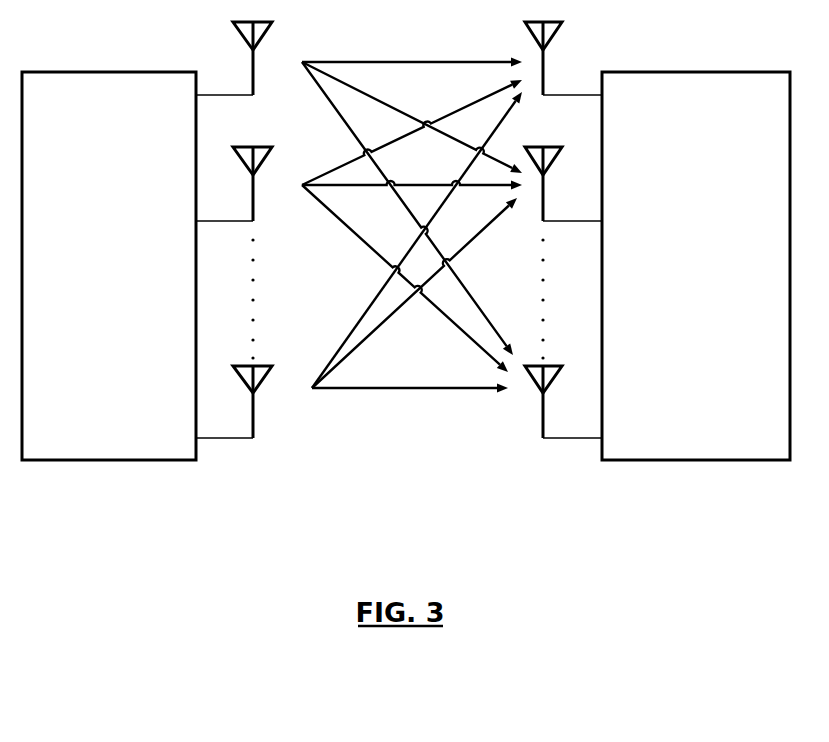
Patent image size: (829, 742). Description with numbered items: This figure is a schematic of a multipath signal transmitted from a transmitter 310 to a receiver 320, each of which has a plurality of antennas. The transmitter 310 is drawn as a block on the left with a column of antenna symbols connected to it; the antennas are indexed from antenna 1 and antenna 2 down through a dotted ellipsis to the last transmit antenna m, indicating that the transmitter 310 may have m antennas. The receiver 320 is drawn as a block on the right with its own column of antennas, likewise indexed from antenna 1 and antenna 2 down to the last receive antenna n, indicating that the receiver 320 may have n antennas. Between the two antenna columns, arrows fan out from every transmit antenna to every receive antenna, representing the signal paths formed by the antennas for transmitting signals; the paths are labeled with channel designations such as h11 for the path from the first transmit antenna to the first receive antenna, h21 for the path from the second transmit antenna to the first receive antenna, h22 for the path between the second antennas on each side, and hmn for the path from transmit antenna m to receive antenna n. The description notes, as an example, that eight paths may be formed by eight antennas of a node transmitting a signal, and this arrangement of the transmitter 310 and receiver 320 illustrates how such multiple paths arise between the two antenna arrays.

The transmitter 310 is at (83, 318).
The receiver 320 is at (670, 318).
The antenna 1 (transmit and receive) 1 is at (399, 58).
The antenna 2 (transmit and receive) 2 is at (399, 184).
The number of transmitter antennas m is at (250, 402).
The number of receiver antennas n is at (563, 402).
The channel coefficient from Tx antenna 1 to Rx antenna 1 h11 is at (412, 50).
The channel coefficient from Tx antenna 2 to Rx antenna 1 h21 is at (412, 132).
The channel coefficient from Tx antenna 2 to Rx antenna 2 h22 is at (412, 174).
The channel coefficient from Tx antenna m to Rx antenna n hmn is at (410, 377).